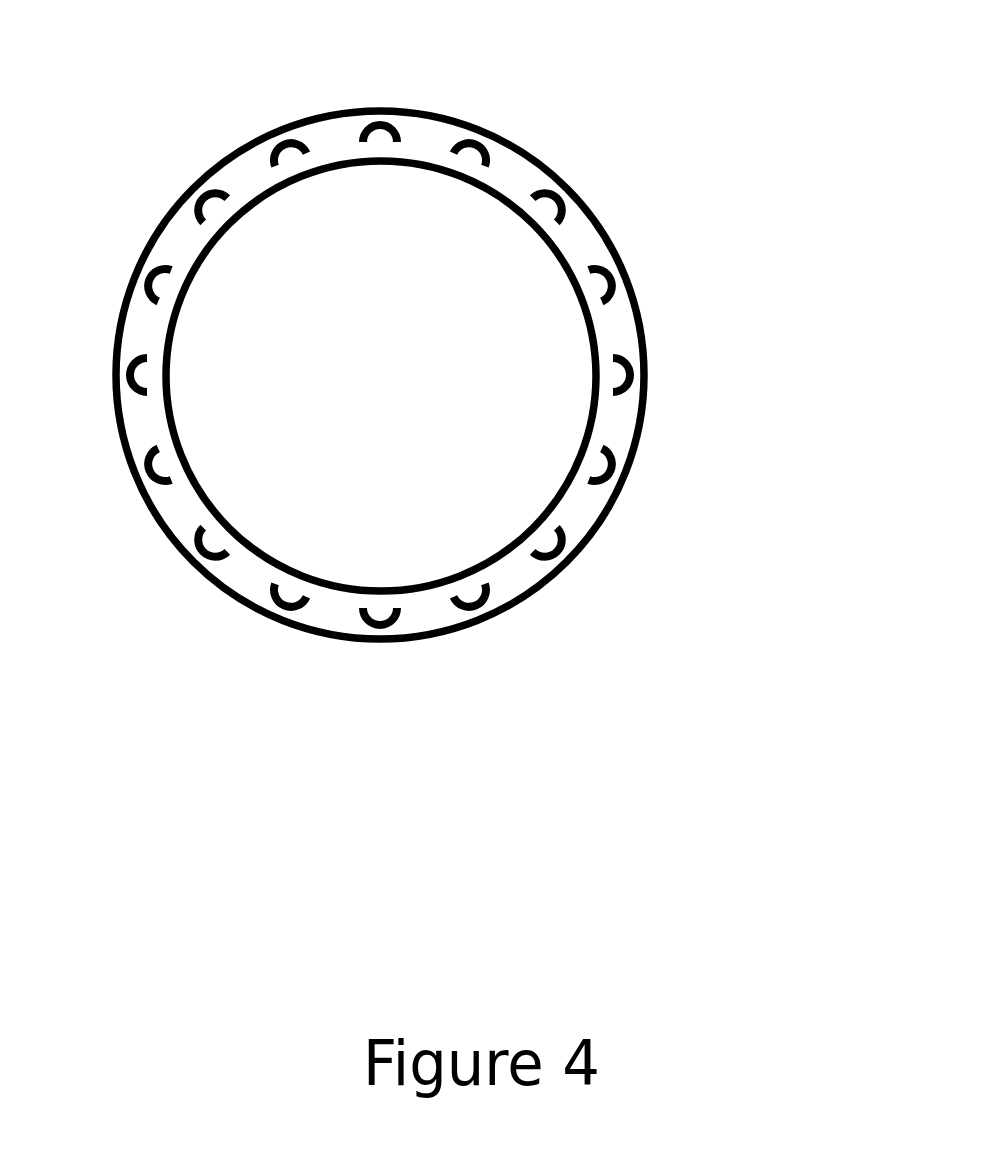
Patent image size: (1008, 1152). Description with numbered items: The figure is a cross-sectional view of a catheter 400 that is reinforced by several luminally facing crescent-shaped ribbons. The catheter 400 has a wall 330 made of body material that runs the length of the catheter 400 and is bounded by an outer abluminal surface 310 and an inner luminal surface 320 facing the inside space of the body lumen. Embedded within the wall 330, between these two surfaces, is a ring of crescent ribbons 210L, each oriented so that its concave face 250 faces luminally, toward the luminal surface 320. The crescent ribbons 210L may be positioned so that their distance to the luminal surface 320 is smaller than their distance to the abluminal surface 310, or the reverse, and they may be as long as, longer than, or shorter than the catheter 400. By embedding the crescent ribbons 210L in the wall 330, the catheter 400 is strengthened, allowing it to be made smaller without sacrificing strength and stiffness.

The catheter 400 is at (102, 35).
The abluminal surface 310 is at (467, 115).
The luminal surface 320 is at (203, 484).
The wall 330 is at (520, 577).
The crescent ribbon 210L is at (612, 488).
The concave face 250 is at (470, 603).